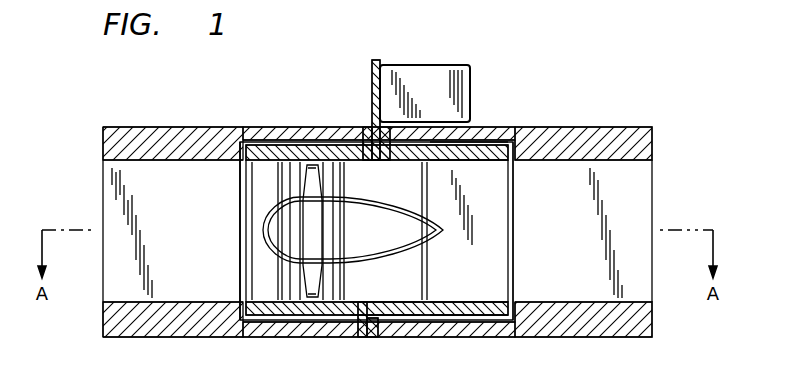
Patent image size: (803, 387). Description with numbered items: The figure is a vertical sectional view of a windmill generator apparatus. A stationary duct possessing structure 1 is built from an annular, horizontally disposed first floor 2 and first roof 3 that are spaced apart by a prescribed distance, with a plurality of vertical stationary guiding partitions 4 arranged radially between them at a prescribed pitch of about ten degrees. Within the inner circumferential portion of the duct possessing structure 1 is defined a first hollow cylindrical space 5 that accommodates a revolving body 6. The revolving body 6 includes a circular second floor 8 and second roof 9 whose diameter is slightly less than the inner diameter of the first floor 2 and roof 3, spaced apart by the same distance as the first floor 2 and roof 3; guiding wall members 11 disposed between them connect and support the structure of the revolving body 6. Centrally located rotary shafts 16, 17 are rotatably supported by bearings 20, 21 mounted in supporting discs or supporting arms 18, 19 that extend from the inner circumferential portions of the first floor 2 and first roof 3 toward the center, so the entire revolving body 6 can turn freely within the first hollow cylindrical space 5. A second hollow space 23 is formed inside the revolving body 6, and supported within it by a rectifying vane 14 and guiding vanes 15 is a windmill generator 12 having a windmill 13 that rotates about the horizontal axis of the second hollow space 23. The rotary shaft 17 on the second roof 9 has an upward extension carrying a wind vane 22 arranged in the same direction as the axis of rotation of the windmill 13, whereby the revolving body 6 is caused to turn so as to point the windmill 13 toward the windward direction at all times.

The duct possessing structure 1 is at (181, 125).
The first floor 2 is at (618, 328).
The first roof 3 is at (605, 136).
The vertical stationary guiding partitions 4 is at (108, 190).
The first hollow cylindrical space 5 is at (238, 268).
The revolving body 6 is at (448, 318).
The second floor 8 is at (485, 300).
The second roof 9 is at (493, 152).
The guiding wall members 11 is at (430, 277).
The windmill generator 12 is at (378, 200).
The windmill 13 is at (310, 300).
The rectifying vane 14 is at (265, 283).
The guiding vanes 15 is at (280, 174).
The rotary shaft 16 is at (372, 301).
The rotary shaft 17 is at (378, 62).
The supporting disc or supporting arm 18 is at (418, 336).
The supporting disc or supporting arm 19 is at (310, 125).
The bearing 20 is at (364, 338).
The bearing 21 is at (366, 128).
The wind vane 22 is at (447, 66).
The second hollow space 23 is at (249, 157).